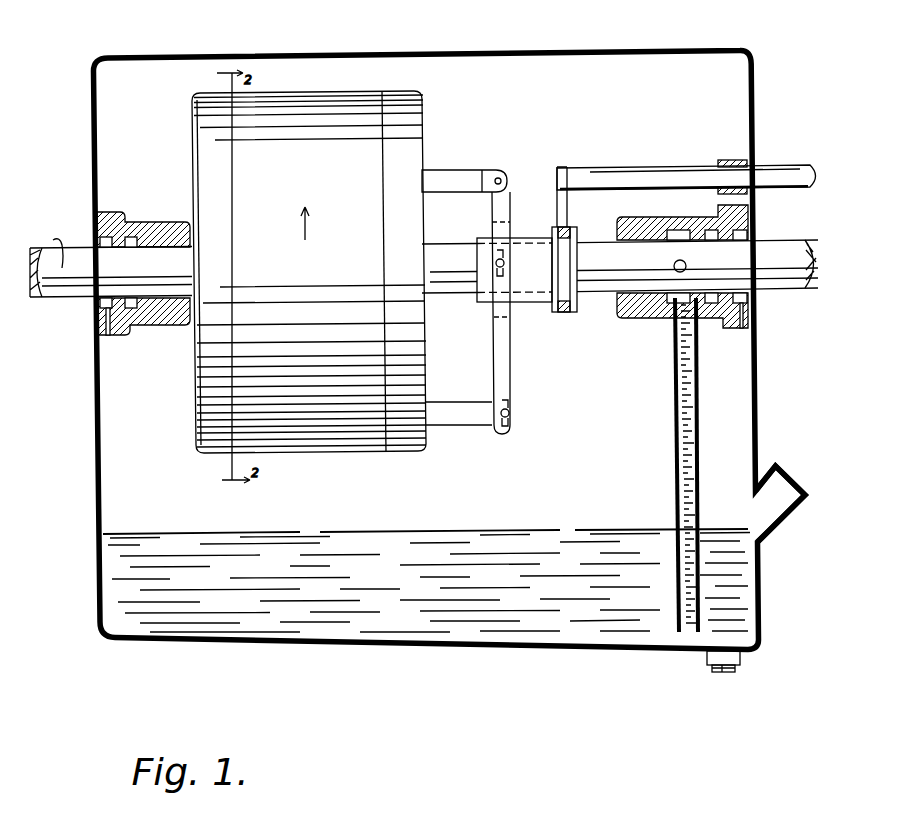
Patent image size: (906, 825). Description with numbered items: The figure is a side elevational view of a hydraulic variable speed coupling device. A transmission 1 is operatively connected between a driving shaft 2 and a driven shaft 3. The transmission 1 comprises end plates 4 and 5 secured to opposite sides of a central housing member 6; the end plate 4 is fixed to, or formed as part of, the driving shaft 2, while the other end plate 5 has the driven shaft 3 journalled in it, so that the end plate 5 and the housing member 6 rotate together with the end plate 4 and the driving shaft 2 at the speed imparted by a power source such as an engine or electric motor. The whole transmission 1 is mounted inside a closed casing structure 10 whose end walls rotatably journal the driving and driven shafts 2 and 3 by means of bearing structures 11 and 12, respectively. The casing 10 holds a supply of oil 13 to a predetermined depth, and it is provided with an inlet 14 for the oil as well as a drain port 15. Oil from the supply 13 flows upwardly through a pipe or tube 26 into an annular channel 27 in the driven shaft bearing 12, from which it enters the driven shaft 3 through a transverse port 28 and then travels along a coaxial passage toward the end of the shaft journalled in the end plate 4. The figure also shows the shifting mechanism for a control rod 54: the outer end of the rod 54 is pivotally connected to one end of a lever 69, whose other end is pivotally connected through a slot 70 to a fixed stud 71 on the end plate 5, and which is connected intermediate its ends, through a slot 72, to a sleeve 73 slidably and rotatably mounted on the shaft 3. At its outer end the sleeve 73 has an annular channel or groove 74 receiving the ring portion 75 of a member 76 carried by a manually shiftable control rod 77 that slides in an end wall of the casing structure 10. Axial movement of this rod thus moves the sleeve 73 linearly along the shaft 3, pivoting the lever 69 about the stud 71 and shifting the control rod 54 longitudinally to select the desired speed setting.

The transmission 1 is at (430, 101).
The driving shaft 2 is at (70, 296).
The driven shaft 3 is at (446, 295).
The end plate 4 is at (208, 158).
The end plate 5 is at (425, 138).
The central housing member 6 is at (308, 169).
The casing structure 10 is at (546, 49).
The bearing structure 11 is at (172, 327).
The bearing structure 12 is at (666, 320).
The oil 13 is at (505, 532).
The inlet 14 is at (790, 481).
The drain port 15 is at (741, 658).
The pipe or tube 26 is at (673, 437).
The annular channel 27 is at (690, 300).
The transverse port 28 is at (690, 267).
The control rod 54 is at (458, 176).
The lever 69 is at (508, 192).
The slot 70 is at (518, 420).
The fixed stud 71 is at (466, 426).
The slot 72 is at (505, 255).
The sleeve 73 is at (530, 290).
The annular channel or groove 74 is at (575, 312).
The ring portion 75 is at (565, 316).
The member 76 is at (560, 167).
The manually shiftable control rod 77 is at (632, 175).